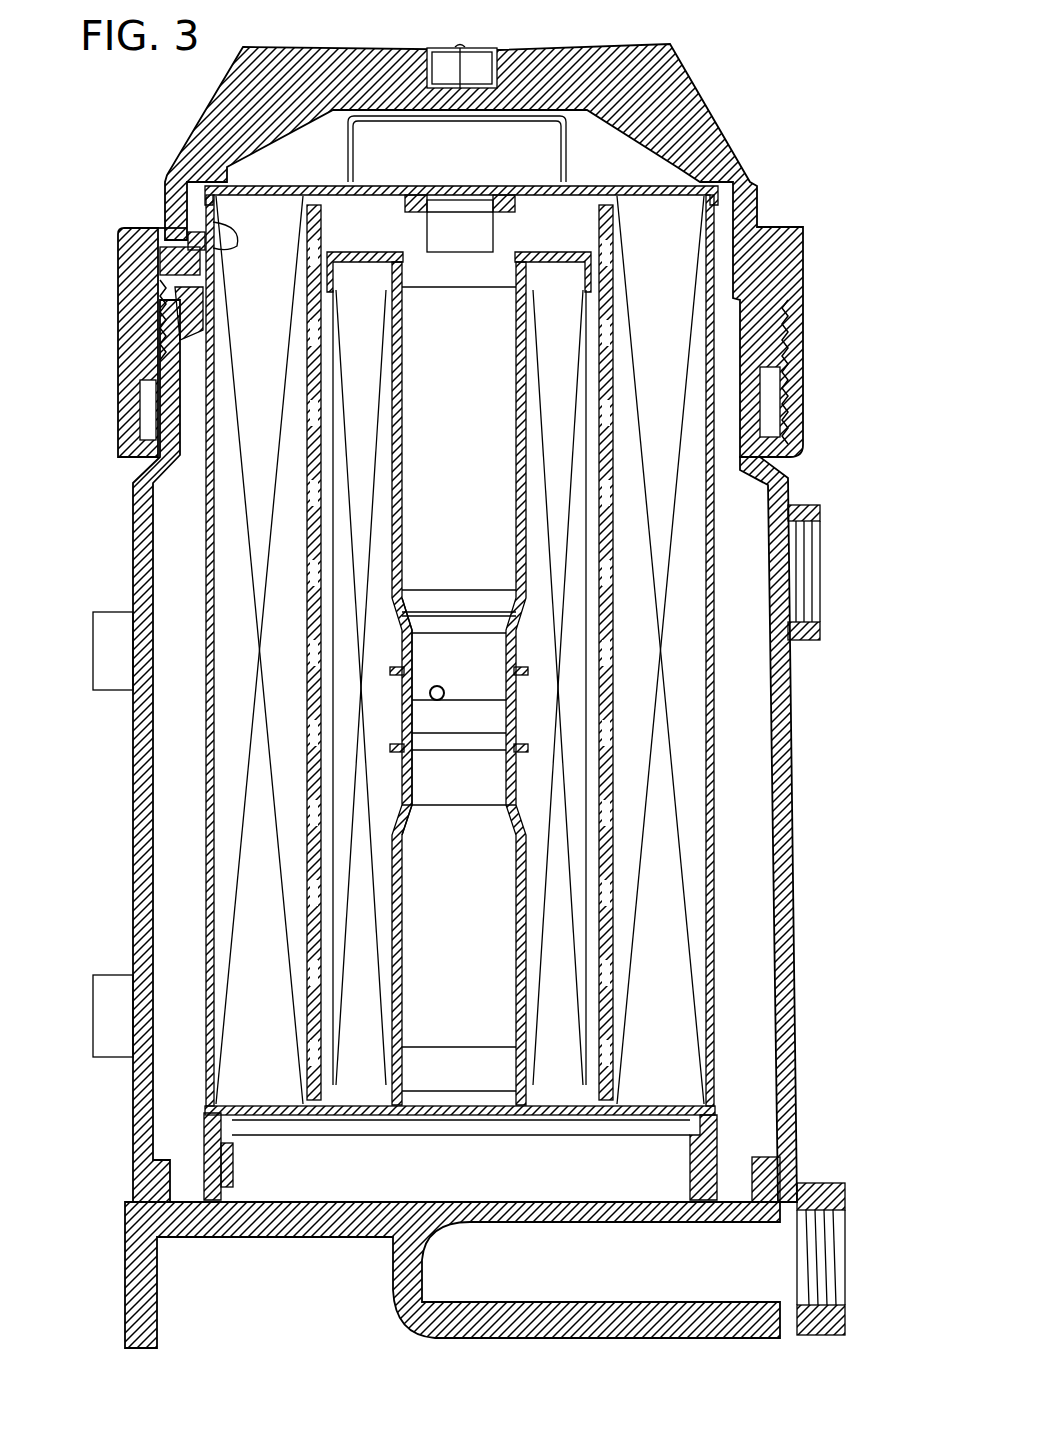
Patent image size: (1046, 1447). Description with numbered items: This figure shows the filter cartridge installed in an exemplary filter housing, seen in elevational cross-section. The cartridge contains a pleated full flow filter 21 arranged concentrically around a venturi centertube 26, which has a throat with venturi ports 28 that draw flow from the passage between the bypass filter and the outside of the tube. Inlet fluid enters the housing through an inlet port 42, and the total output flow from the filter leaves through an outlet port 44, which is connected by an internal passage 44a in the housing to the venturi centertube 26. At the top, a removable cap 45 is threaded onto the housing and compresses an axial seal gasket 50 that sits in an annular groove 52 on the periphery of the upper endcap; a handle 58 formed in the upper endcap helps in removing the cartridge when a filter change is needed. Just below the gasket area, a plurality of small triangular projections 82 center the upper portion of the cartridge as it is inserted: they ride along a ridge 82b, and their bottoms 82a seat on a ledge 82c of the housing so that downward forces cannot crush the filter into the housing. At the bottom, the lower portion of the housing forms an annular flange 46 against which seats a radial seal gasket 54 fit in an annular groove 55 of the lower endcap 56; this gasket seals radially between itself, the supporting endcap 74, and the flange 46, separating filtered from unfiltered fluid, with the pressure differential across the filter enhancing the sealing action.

The full flow filter 21 is at (227, 532).
The venturi centertube 26 is at (405, 800).
The venturi ports 28 is at (430, 700).
The inlet port 42 is at (800, 571).
The outlet port 44 is at (810, 1257).
The internal passage 44a is at (430, 1258).
The removable cap 45 is at (700, 128).
The annular flange 46 is at (225, 1178).
The axial seal gasket 50 is at (160, 224).
The annular groove 52 is at (233, 240).
The radial seal gasket 54 is at (200, 1138).
The annular groove 55 is at (245, 1118).
The lower endcap 56 is at (320, 1117).
The handle 58 is at (525, 117).
The endcap 74 is at (288, 1118).
The triangular projections 82 is at (187, 289).
The bottoms of the projections 82a is at (200, 312).
The ridge 82b is at (124, 281).
The ledge 82c is at (150, 346).